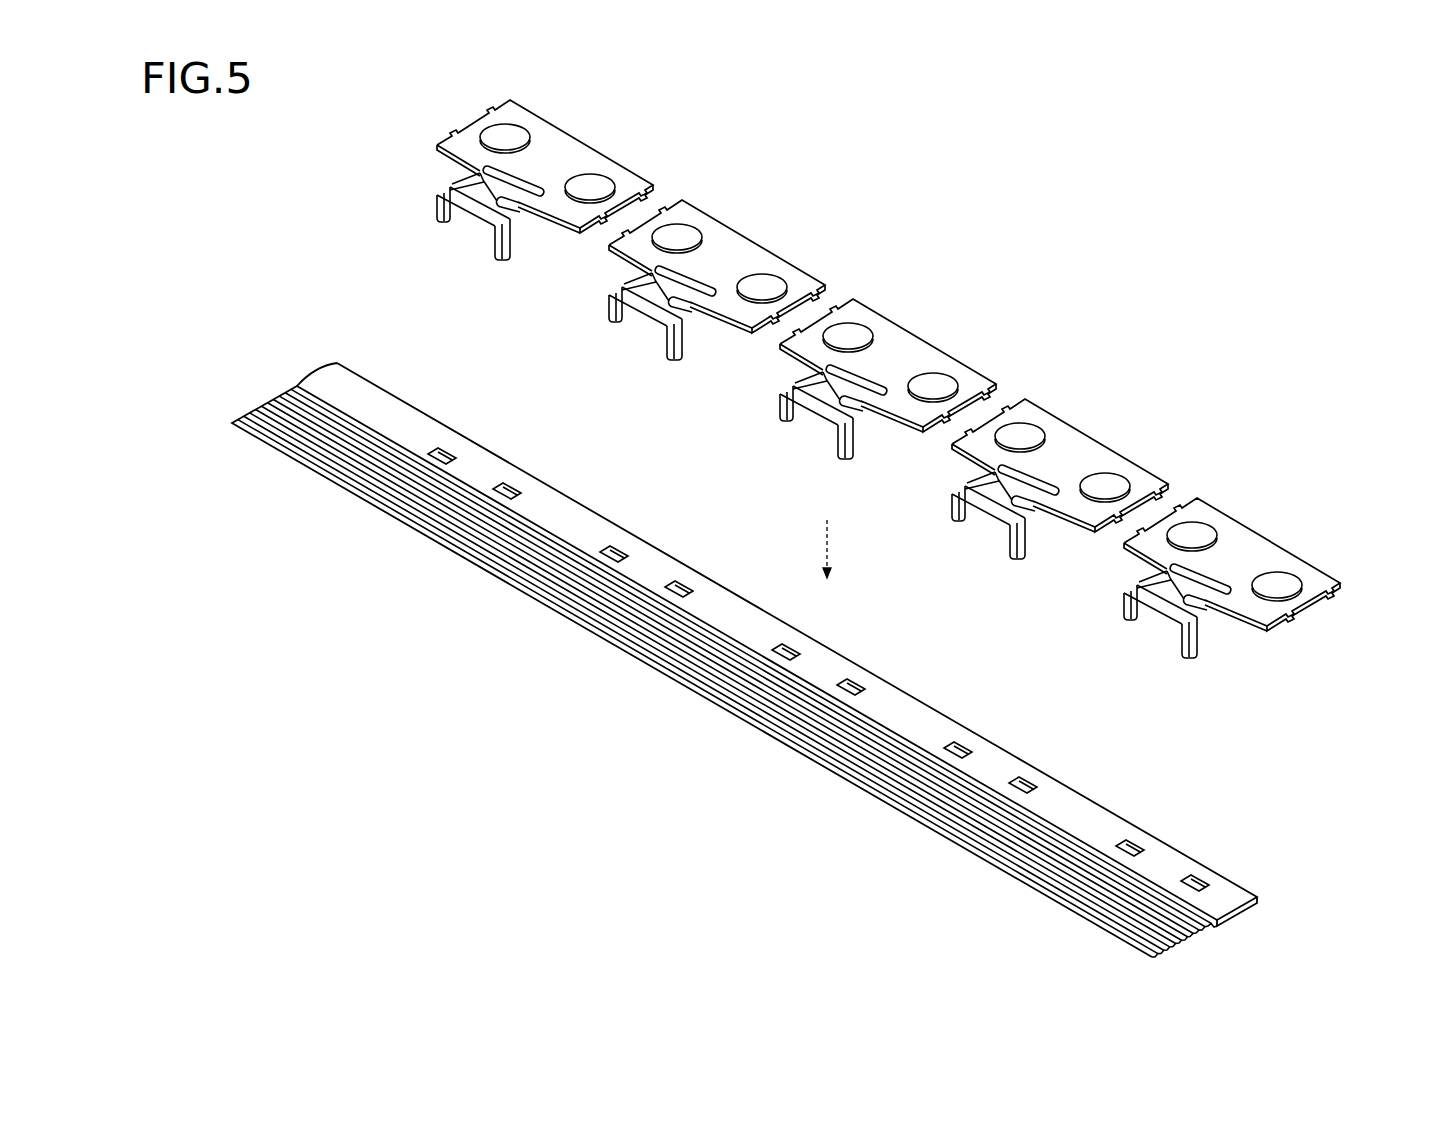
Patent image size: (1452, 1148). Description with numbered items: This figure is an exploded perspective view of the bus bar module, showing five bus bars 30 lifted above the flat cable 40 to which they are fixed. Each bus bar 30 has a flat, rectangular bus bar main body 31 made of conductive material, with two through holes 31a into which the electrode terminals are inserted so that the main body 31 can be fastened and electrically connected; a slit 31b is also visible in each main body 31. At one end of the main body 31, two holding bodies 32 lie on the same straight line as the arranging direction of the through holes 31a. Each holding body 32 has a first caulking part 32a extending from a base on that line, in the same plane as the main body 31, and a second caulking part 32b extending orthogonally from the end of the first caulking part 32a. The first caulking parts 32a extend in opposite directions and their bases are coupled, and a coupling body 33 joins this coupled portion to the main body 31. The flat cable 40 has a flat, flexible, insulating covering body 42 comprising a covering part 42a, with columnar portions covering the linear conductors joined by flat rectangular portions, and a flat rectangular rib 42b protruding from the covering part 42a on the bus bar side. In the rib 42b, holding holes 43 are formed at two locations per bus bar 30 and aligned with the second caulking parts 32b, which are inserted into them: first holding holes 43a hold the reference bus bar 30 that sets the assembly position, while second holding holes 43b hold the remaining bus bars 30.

The bus bar 30 is at (865, 369).
The bus bar main body 31 is at (898, 342).
The through hole 31a is at (898, 327).
The slit of plate portion 31b is at (876, 340).
The holding body 32 is at (753, 428).
The first caulking part 32a is at (781, 412).
The second caulking part 32b is at (781, 441).
The coupling body 33 is at (870, 423).
The flat cable 40 is at (246, 279).
The covering body 42 is at (733, 616).
The covering part 42a is at (266, 404).
The rib 42b is at (330, 378).
The holding hole 43 is at (833, 645).
The first holding hole 43a is at (831, 646).
The second holding hole 43b is at (833, 645).